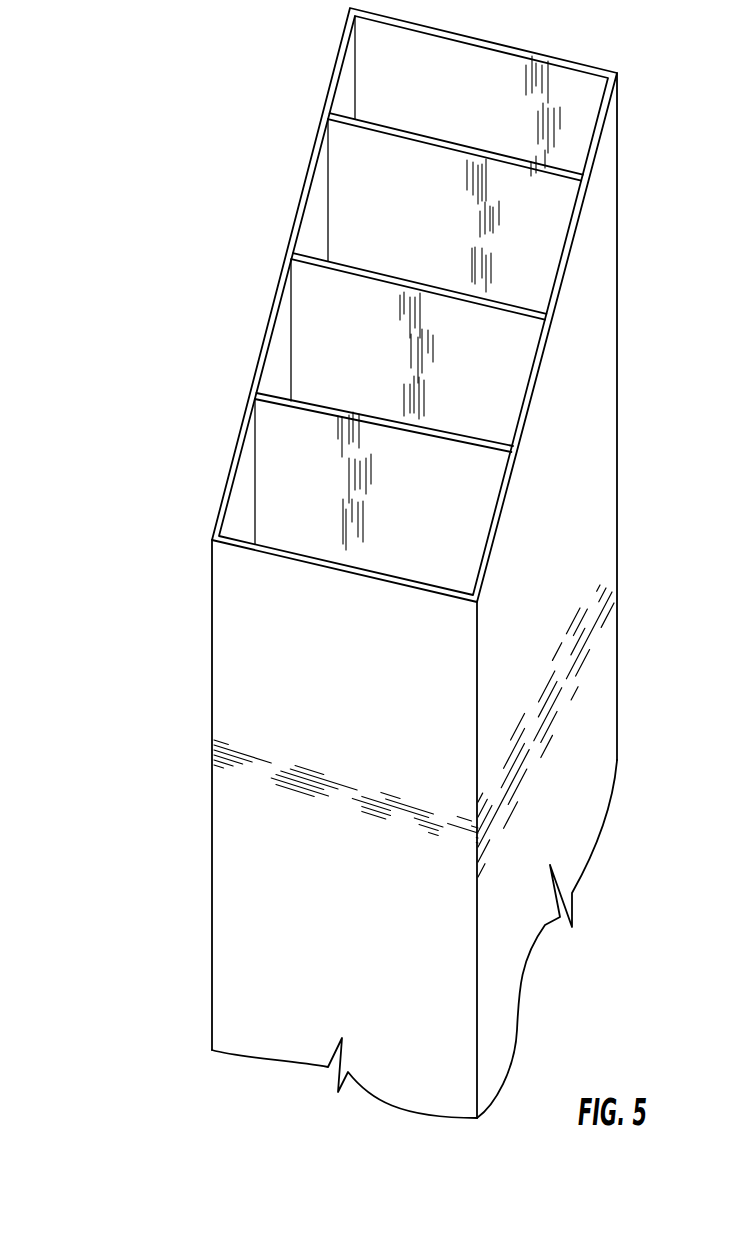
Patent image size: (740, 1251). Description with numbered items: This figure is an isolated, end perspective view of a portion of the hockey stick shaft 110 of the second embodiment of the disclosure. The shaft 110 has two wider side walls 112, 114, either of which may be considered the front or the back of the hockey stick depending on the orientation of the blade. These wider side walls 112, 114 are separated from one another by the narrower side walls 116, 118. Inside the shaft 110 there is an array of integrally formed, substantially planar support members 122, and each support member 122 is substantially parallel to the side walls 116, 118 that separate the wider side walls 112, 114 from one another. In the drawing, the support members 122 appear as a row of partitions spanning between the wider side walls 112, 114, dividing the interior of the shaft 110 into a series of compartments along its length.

The hockey stick shaft 110 is at (163, 660).
The wider side wall 112 is at (555, 584).
The wider side wall 114 is at (230, 457).
The side wall 116 is at (360, 677).
The side wall 118 is at (469, 104).
The support member 122 is at (425, 231).